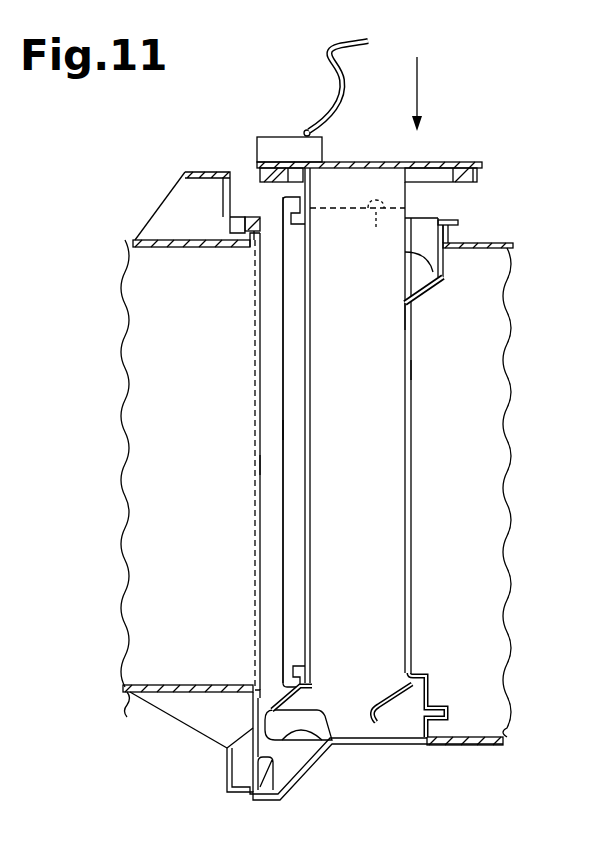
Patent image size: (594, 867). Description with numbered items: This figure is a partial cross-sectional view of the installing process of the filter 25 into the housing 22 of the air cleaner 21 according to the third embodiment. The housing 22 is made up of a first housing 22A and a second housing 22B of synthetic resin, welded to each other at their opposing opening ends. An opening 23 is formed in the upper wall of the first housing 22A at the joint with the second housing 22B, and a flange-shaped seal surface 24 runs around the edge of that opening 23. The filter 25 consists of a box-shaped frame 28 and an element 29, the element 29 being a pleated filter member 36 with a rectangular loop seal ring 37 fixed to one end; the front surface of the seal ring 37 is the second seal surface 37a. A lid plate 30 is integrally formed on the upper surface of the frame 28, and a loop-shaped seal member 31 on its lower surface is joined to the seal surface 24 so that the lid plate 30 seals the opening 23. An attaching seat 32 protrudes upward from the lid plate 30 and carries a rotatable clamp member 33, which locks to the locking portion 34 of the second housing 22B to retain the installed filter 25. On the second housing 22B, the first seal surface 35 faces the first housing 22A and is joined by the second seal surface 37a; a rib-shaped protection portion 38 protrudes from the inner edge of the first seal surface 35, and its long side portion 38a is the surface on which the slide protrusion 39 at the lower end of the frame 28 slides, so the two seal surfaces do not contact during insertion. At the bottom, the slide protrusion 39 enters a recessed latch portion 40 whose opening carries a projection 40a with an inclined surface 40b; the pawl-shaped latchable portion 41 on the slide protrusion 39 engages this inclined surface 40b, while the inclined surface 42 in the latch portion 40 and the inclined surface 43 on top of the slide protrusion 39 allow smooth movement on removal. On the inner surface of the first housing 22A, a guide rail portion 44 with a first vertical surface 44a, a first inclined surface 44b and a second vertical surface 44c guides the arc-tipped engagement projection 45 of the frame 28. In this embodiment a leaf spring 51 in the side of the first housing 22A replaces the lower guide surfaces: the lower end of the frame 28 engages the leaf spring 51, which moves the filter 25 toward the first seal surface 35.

The air cleaner 21 is at (514, 387).
The housing 22 is at (512, 438).
The first housing 22A is at (463, 745).
The second housing 22B is at (133, 700).
The opening 23 is at (428, 202).
The seal surface 24 is at (452, 215).
The filter 25 is at (278, 308).
The frame 28 is at (408, 410).
The element 29 is at (283, 345).
The lid plate 30 is at (448, 162).
The seal member 31 is at (474, 173).
The attaching seat 32 is at (322, 146).
The clamp member 33 is at (347, 80).
The locking portion 34 is at (200, 172).
The first seal surface 35 is at (268, 226).
The filter member 36 is at (376, 224).
The seal ring 37 is at (283, 395).
The second seal surface 37a is at (288, 430).
The protection portion 38 is at (283, 240).
The long side portion 38a is at (255, 470).
The slide protrusion 39 is at (258, 722).
The latch portion 40 is at (238, 786).
The projection 40a is at (266, 797).
The inclined surface 40b is at (330, 762).
The latchable portion 41 is at (308, 728).
The inclined surface 42 is at (246, 760).
The inclined surface 43 is at (277, 720).
The guide rail portion 44 is at (412, 449).
The first vertical surface 44a is at (435, 235).
The first inclined surface 44b is at (413, 298).
The second vertical surface 44c is at (412, 374).
The engagement projection 45 is at (428, 268).
The leaf spring 51 is at (393, 703).